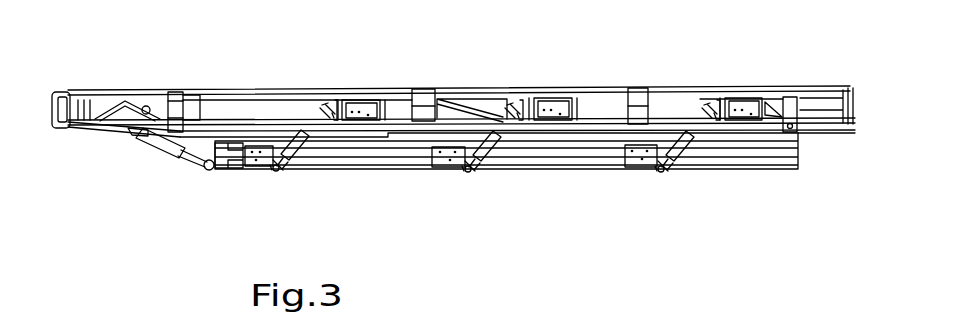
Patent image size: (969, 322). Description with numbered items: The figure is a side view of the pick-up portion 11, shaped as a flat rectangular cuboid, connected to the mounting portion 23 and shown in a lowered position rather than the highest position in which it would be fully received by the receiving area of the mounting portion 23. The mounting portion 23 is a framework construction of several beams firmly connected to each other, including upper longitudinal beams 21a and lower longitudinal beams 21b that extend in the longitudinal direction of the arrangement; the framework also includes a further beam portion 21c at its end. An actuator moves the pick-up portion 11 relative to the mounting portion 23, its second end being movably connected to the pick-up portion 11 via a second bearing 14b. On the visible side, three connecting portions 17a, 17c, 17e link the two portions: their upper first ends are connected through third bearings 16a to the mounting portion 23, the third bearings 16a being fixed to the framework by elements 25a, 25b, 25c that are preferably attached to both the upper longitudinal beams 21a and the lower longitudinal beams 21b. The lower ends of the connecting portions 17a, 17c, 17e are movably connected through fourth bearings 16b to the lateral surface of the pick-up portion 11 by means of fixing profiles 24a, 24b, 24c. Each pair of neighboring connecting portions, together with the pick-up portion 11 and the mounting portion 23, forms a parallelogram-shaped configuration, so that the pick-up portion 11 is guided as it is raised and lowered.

The pick-up portion 11 is at (355, 170).
The second bearing 14b is at (210, 170).
The third bearing 16a is at (328, 104).
The fourth bearing 16b is at (277, 163).
The connecting portion 17a is at (293, 150).
The connecting portion 17c is at (497, 150).
The connecting portion 17e is at (690, 150).
The upper longitudinal beam 21a is at (252, 88).
The lower longitudinal beam 21b is at (203, 125).
The lower chord of boom section 21c is at (107, 123).
The mounting portion 23 is at (646, 78).
The fixing profile 24a is at (245, 163).
The fixing profile 24b is at (437, 163).
The fixing profile 24c is at (642, 163).
The element 25a is at (362, 105).
The element 25b is at (557, 105).
The element 25c is at (747, 105).